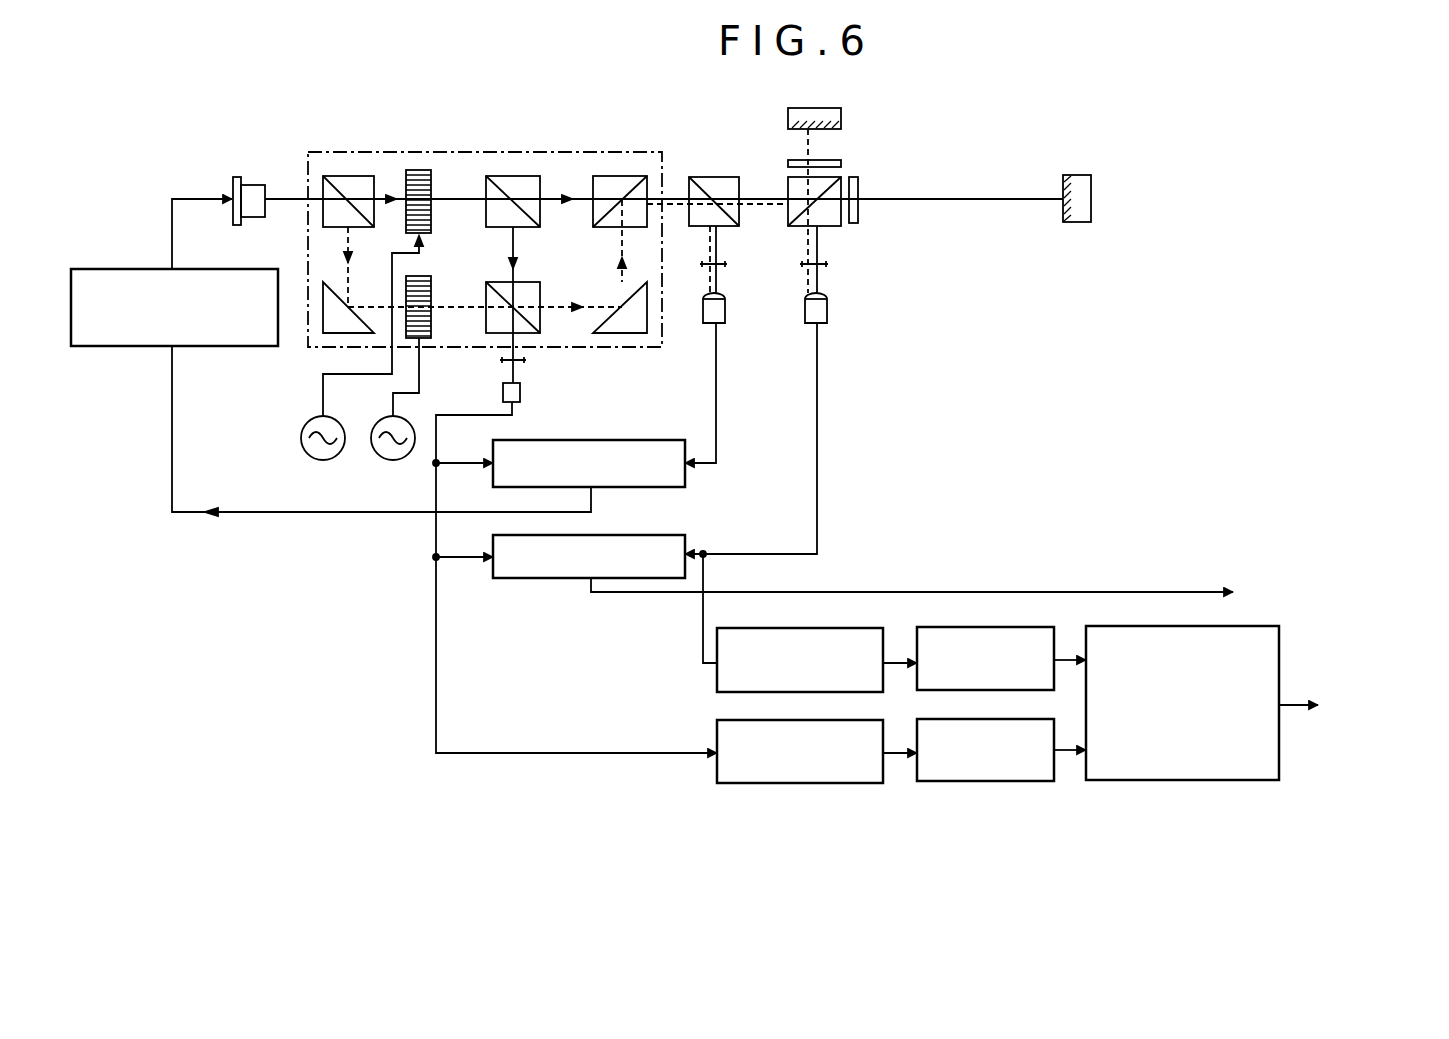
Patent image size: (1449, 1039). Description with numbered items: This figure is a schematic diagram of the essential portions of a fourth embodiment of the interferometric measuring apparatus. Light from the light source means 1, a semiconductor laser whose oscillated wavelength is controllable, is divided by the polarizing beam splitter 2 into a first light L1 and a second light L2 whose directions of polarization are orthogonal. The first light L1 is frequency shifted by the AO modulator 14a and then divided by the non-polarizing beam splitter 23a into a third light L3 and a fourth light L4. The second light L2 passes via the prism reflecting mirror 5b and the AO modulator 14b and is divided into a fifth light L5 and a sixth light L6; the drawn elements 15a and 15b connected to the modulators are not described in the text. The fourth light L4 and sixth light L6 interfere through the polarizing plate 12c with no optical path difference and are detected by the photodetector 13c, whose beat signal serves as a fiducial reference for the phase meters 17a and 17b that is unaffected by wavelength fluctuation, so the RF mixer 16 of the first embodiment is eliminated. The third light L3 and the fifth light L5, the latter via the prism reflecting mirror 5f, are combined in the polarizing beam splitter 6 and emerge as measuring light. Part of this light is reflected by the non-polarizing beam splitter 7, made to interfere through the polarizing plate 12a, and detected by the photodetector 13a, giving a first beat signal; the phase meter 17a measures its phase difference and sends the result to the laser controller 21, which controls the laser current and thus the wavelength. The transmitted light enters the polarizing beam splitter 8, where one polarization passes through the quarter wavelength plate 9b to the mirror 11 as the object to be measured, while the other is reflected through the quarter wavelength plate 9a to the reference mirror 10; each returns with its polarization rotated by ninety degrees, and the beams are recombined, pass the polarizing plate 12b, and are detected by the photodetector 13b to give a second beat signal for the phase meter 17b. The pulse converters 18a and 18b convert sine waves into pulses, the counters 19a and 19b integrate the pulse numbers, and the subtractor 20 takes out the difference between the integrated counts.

The light source means 1 is at (248, 195).
The polarizing beam splitter 2 is at (338, 186).
The first light L1 is at (383, 196).
The second light L2 is at (322, 232).
The third light L3 is at (578, 196).
The fourth light L4 is at (515, 250).
The fifth light L5 is at (548, 305).
The sixth light L6 is at (512, 347).
The AO modulator 14a is at (417, 173).
The AO modulator 14b is at (420, 280).
The non-polarizing beam splitter 23a is at (505, 183).
The RF mixer 16 is at (582, 150).
The polarizing beam splitter 6 is at (613, 183).
The prism reflecting mirror 5b is at (335, 320).
The prism reflecting mirror 5f is at (638, 320).
The non-polarizing beam splitter 7 is at (713, 178).
The polarizing beam splitter 8 is at (835, 183).
The quarter wavelength plate 9a is at (830, 163).
The quarter wavelength plate 9b is at (860, 198).
The reference mirror 10 is at (820, 115).
The mirror 11 is at (1078, 172).
The polarizing plate 12a is at (722, 266).
The polarizing plate 12b is at (822, 266).
The polarizing plate 12c is at (500, 362).
The photodetector 13a is at (720, 308).
The photodetector 13b is at (820, 308).
The photodetector 13c is at (522, 392).
The oscillator driving modulator 14a 15a is at (303, 440).
The oscillator driving modulator 14b 15b is at (378, 440).
The phase meter 17a is at (610, 487).
The phase meter 17b is at (510, 578).
The pulse converter 18a is at (785, 628).
The pulse converter 18b is at (755, 786).
The counter 19a is at (960, 627).
The counter 19b is at (948, 783).
The subtractor 20 is at (1163, 782).
The laser controller 21 is at (130, 337).